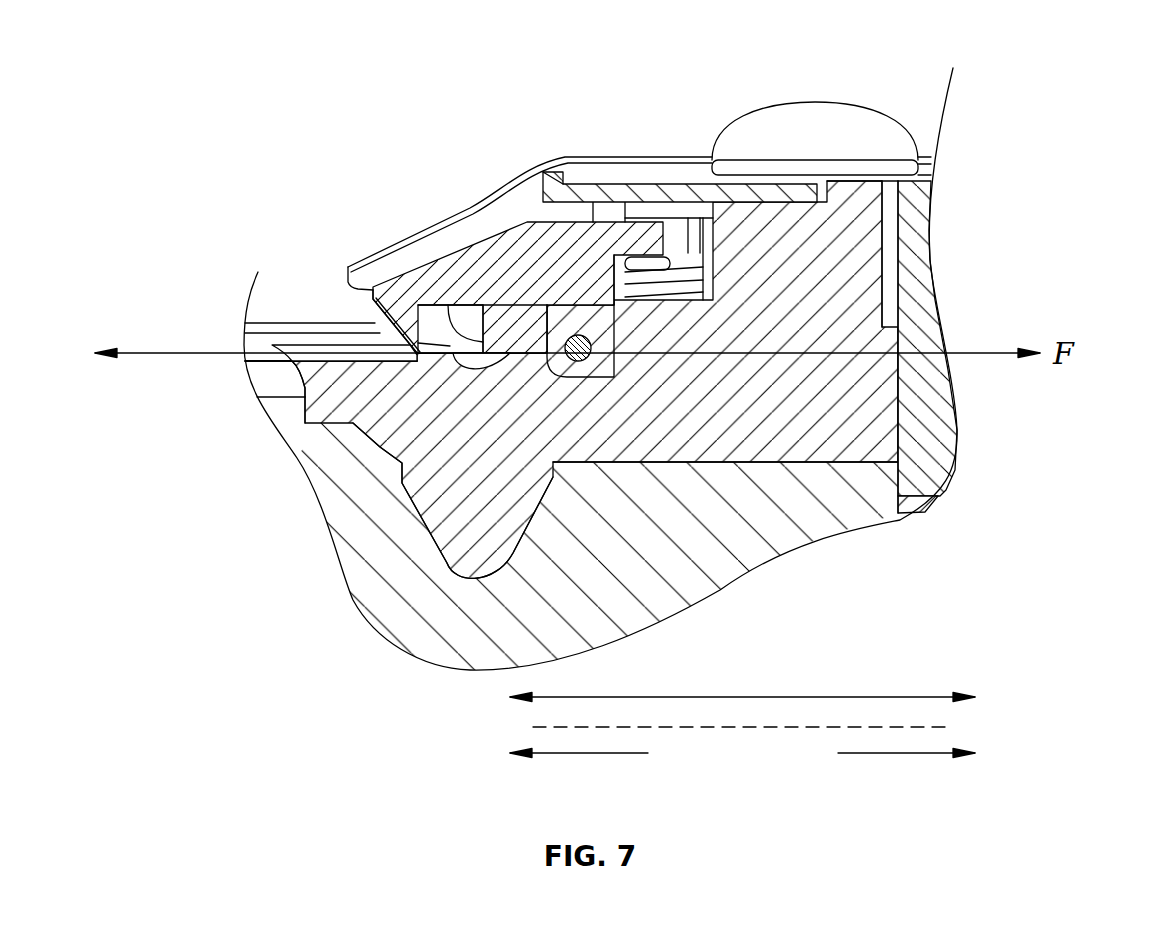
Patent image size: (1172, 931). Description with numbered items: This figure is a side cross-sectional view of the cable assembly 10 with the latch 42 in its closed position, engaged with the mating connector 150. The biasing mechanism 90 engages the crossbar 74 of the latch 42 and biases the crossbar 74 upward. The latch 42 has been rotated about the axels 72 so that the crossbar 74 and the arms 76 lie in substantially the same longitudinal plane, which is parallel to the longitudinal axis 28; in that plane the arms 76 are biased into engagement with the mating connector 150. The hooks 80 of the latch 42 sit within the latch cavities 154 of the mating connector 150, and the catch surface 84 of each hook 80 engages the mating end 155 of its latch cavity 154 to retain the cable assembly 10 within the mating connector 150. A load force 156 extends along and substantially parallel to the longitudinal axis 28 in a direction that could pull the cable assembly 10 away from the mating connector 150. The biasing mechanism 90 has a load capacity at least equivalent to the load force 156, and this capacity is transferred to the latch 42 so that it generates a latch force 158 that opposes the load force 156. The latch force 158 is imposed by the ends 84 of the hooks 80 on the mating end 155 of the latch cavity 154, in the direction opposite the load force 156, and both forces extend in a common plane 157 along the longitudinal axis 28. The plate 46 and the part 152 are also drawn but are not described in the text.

The cable assembly 10 is at (1070, 108).
The longitudinal axis 28 is at (818, 697).
The latch 42 is at (436, 212).
The plate 46 is at (662, 208).
The axels 72 is at (580, 335).
The crossbar 74 is at (663, 240).
The arms 76 is at (373, 257).
The hooks 80 is at (403, 350).
The catch surface 84 is at (477, 350).
The biasing mechanism 90 is at (667, 283).
The mating connector 150 is at (258, 372).
The pawl 152 is at (525, 358).
The latch cavity 154 is at (329, 366).
The mating end 155 is at (415, 362).
The load force 156 is at (570, 753).
The plane 157 is at (803, 727).
The latch force 158 is at (920, 753).